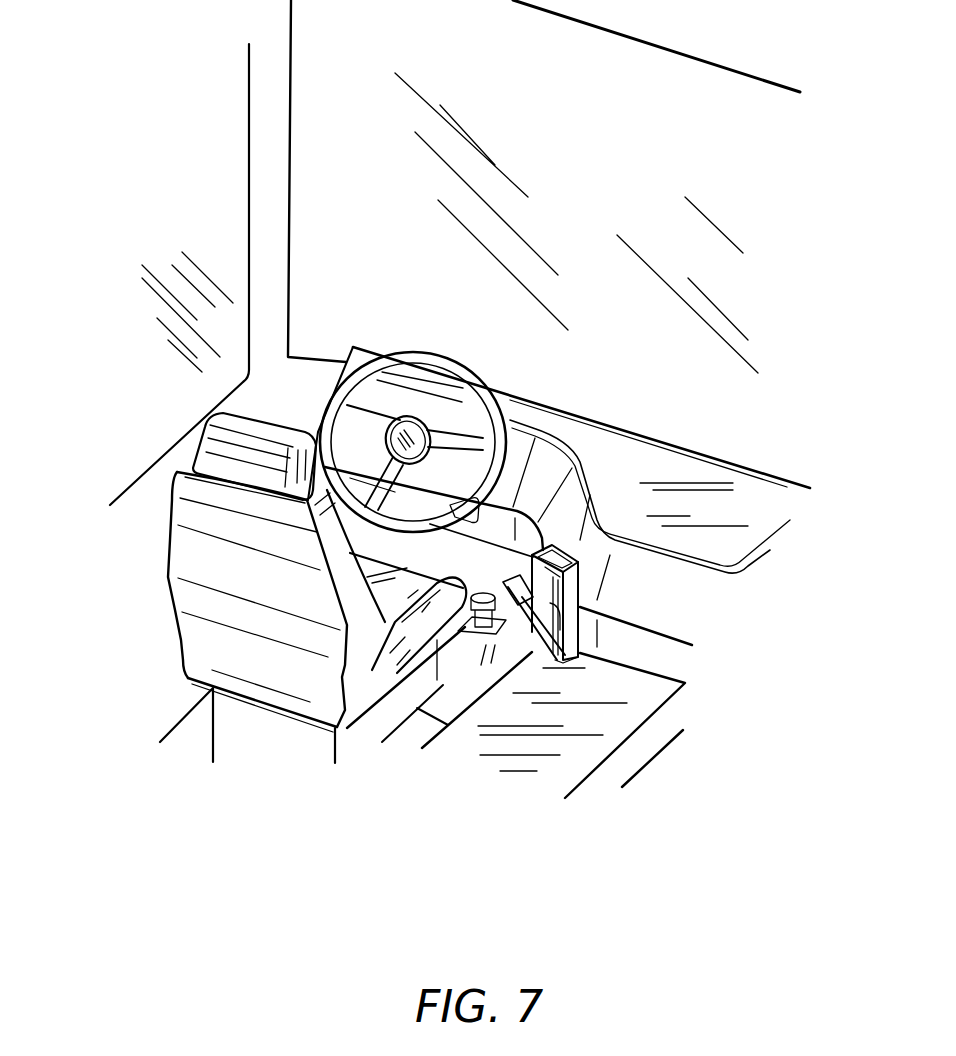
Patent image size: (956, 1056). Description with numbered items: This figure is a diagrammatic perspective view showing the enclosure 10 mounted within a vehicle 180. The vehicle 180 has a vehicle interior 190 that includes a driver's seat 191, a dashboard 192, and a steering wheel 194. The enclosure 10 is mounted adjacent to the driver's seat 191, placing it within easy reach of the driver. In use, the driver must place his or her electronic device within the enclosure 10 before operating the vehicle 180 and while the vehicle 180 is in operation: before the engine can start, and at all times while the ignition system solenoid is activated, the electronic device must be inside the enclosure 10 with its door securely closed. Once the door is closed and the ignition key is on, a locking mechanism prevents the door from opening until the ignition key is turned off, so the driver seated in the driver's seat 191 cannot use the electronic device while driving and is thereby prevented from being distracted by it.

The enclosure 10 is at (578, 587).
The vehicle 180 is at (248, 136).
The vehicle interior 190 is at (142, 593).
The driver's seat 191 is at (178, 665).
The dashboard 192 is at (742, 503).
The steering wheel 194 is at (473, 363).